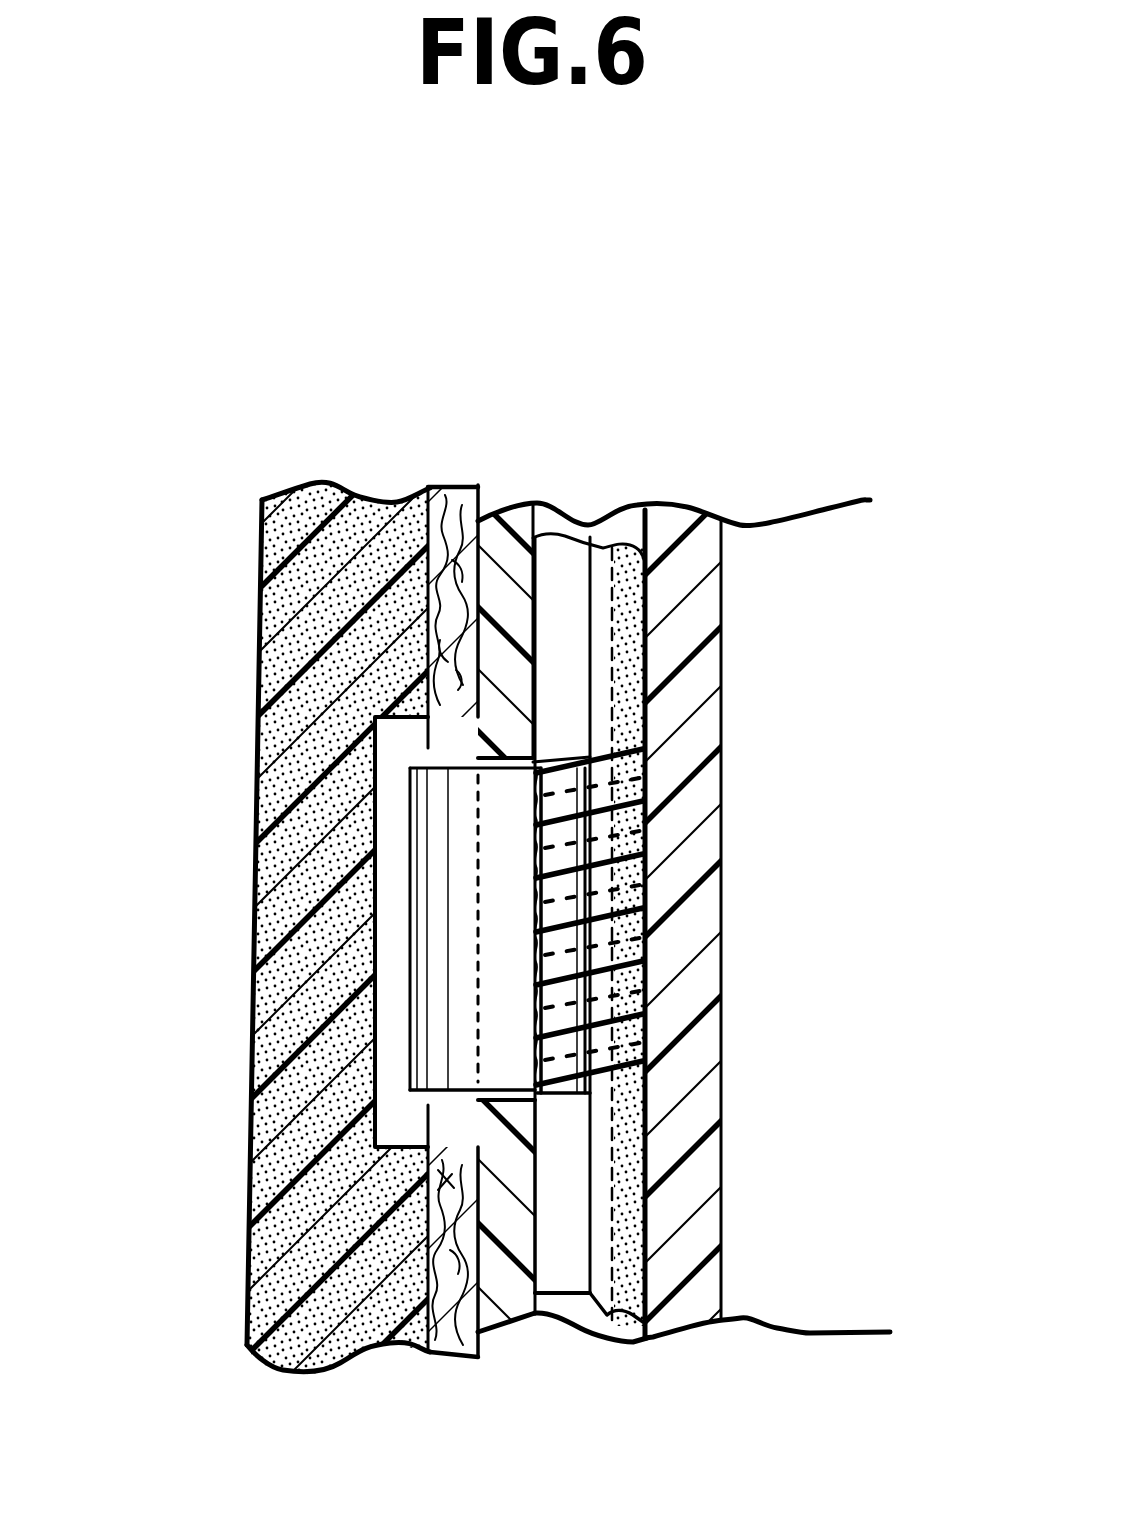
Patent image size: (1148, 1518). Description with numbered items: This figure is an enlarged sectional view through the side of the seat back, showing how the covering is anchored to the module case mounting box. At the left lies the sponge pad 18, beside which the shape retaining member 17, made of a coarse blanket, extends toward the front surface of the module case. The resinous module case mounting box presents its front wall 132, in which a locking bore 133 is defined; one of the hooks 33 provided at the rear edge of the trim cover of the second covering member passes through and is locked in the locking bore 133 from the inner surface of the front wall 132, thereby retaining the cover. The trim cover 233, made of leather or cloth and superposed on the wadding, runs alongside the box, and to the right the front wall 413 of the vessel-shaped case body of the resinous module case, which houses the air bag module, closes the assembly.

The pad 18 is at (280, 792).
The shape retaining member 17 is at (443, 490).
The front wall 132 is at (503, 532).
The locking bore 133 is at (500, 1095).
The trim cover 233 is at (605, 560).
The front wall 413 is at (697, 667).
The hook 33 is at (423, 958).